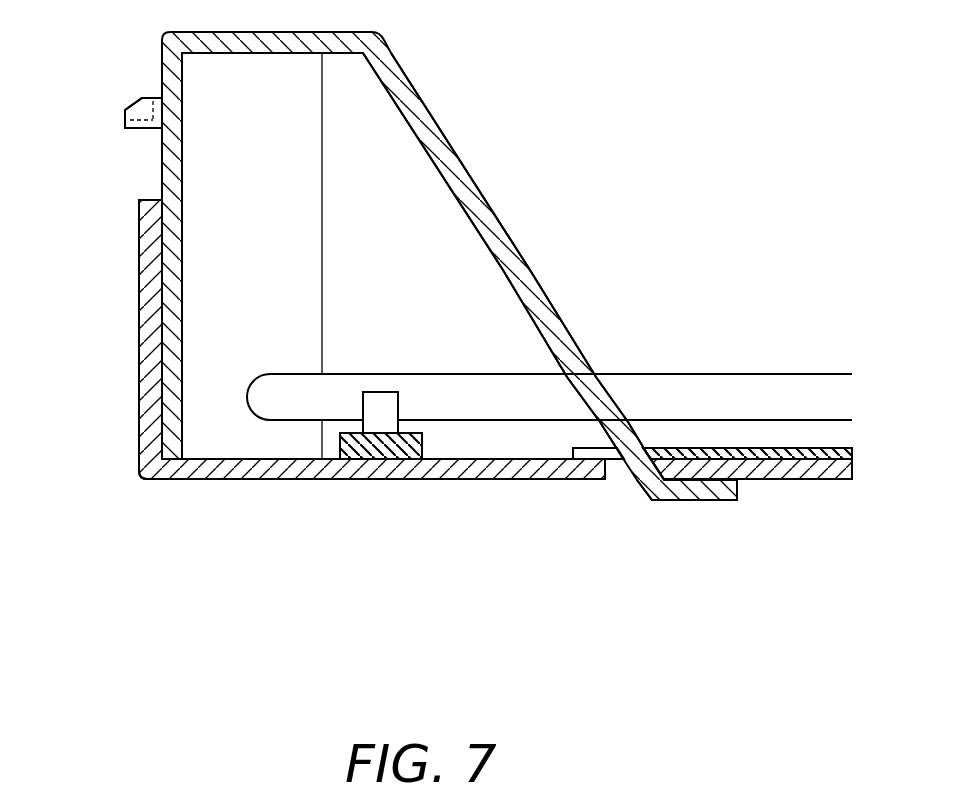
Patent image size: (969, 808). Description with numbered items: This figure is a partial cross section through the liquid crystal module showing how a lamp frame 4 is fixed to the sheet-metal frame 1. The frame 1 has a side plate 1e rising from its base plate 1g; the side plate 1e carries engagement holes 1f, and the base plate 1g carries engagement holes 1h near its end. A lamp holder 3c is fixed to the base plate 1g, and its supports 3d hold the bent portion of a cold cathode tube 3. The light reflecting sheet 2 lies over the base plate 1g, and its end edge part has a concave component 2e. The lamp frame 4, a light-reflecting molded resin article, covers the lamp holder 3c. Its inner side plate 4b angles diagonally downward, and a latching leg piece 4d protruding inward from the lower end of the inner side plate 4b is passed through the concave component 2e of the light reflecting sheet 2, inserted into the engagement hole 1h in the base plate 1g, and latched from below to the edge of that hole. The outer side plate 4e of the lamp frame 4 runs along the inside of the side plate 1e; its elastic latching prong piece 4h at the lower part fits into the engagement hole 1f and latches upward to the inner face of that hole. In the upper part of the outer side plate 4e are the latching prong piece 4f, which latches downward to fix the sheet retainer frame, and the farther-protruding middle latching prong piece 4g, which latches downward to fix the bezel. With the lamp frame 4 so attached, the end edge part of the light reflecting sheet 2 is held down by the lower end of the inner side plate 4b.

The frame 1 is at (141, 488).
The left and right side plates 1e is at (140, 298).
The engagement holes 1f is at (137, 440).
The base plate 1g is at (812, 480).
The engagement holes 1h is at (611, 474).
The light reflecting sheet 2 is at (777, 447).
The concave components 2e is at (657, 456).
The cold cathode tubes 3 is at (470, 373).
The lamp holder 3c is at (382, 484).
The supports 3d is at (380, 400).
The lamp frame 4 is at (461, 106).
The inner side plate 4b is at (494, 214).
The latching leg pieces 4d is at (703, 494).
The outer side plate 4e is at (180, 237).
The left and right latching prong pieces 4f is at (125, 125).
The middle latching prong piece 4g is at (137, 100).
The latching prong pieces 4h is at (134, 416).